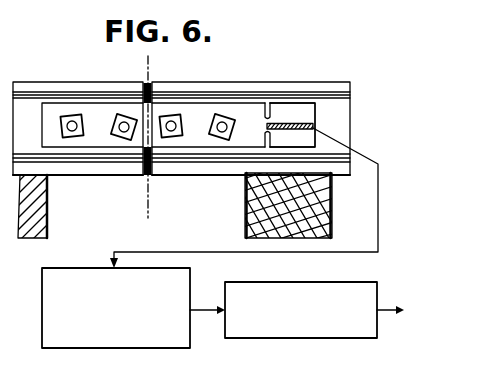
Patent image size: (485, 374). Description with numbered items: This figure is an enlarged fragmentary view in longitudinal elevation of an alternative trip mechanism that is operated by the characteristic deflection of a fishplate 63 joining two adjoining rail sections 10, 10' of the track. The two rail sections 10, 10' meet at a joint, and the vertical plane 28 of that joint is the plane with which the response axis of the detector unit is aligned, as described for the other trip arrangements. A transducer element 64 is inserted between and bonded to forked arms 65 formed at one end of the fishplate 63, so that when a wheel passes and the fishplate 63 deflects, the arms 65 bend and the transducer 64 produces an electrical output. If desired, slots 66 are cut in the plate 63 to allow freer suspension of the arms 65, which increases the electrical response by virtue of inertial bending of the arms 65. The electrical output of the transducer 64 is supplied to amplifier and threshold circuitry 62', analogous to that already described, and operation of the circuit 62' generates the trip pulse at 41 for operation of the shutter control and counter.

The rail section 10' is at (78, 116).
The vertical plane 28 is at (151, 57).
The rail 10 is at (251, 116).
The fishplate 63 is at (212, 107).
The slots 66 is at (267, 100).
The forked arms 65 is at (303, 105).
The transducer element 64 is at (301, 123).
The amplifier and threshold circuitry 62' is at (116, 294).
The trip pulse 41 is at (334, 283).